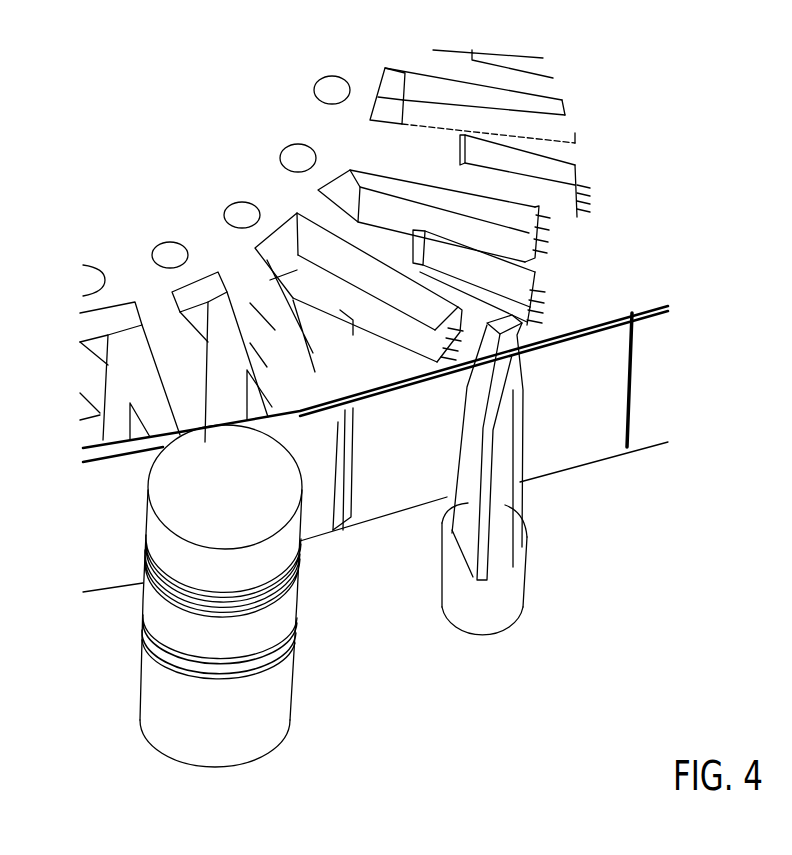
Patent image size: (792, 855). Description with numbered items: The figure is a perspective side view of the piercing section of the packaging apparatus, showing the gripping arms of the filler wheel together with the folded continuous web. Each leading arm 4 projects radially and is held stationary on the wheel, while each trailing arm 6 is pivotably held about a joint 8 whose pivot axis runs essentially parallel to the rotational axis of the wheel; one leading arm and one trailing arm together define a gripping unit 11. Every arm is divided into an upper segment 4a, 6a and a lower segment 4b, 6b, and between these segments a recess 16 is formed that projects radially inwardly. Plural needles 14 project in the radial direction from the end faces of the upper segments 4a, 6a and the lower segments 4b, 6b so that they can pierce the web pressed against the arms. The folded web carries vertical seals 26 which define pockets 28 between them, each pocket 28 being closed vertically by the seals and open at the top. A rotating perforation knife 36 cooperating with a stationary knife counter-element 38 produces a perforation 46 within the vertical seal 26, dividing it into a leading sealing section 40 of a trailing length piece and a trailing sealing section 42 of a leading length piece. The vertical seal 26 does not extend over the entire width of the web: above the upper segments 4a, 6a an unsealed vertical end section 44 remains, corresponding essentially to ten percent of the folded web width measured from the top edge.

The leading arm 4 is at (161, 318).
The upper segment of leading arm 4a is at (540, 208).
The lower segment of leading arm 4b is at (540, 284).
The trailing arm 6 is at (247, 327).
The upper segment of trailing arm 6a is at (388, 181).
The lower segment of trailing arm 6b is at (556, 331).
The joint 8 is at (326, 86).
The gripping unit 11 is at (308, 343).
The needles 14 is at (580, 193).
The recess 16 is at (568, 160).
The vertical seal 26 is at (640, 370).
The pocket 28 is at (567, 325).
The rotating perforation knife 36 is at (535, 585).
The knife counter-element 38 is at (532, 345).
The leading sealing section 40 is at (352, 512).
The trailing sealing section 42 is at (333, 533).
The unsealed vertical end section 44 is at (378, 393).
The perforation 46 is at (344, 488).